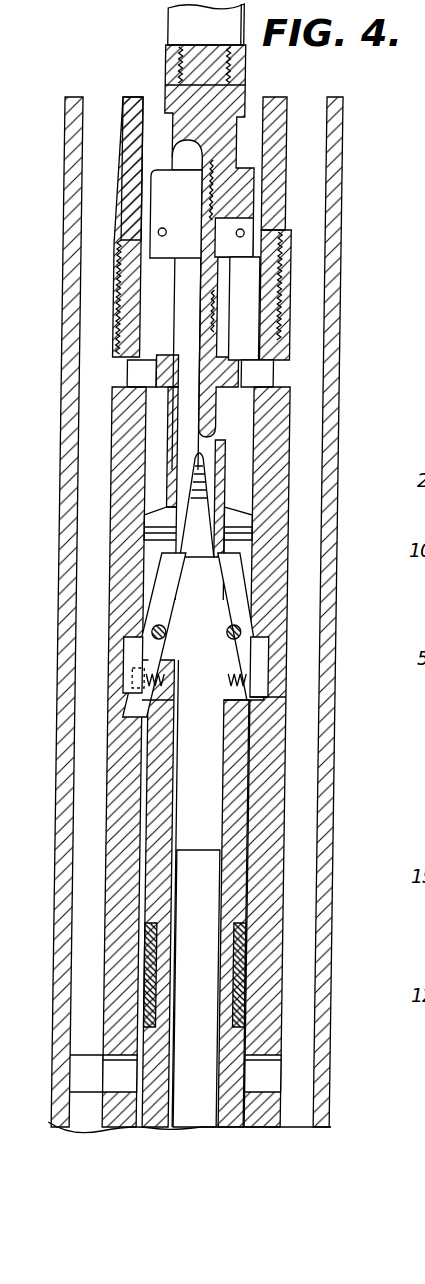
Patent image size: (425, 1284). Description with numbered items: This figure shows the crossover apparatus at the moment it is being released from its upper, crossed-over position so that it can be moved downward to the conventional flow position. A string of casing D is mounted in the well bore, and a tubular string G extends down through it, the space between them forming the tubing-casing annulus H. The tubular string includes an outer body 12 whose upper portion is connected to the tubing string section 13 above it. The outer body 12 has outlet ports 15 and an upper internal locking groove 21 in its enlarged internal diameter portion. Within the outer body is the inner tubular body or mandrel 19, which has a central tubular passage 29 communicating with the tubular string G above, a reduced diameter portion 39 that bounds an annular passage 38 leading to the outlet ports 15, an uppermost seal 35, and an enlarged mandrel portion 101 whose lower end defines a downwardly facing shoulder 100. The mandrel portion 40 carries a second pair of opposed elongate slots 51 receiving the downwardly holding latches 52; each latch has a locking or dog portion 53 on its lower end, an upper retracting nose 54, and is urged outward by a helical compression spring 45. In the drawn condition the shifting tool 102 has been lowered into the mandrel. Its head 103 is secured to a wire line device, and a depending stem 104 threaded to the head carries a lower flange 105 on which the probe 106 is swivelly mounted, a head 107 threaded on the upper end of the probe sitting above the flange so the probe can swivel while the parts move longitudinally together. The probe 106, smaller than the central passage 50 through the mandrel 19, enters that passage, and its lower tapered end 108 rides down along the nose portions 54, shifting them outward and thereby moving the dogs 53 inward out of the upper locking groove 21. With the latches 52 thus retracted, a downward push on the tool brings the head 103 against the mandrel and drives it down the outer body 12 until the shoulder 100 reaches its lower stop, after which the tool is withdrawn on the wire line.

The casing D is at (66, 830).
The tubing-casing annulus H is at (100, 117).
The tubular string G is at (281, 99).
The tubing string section 13 is at (279, 142).
The head 103 is at (250, 197).
The stem 104 is at (210, 268).
The head 107 is at (222, 284).
The lower flange 105 is at (225, 340).
The shifting tool 102 is at (160, 286).
The probe 106 is at (216, 412).
The enlarged mandrel portion 101 is at (245, 522).
The lower tapered end 108 is at (194, 560).
The second pair of opposed elongate slots 51 is at (245, 552).
The upper retracting nose 54 is at (180, 604).
The second pair of latches 52 is at (240, 620).
The upper internal locking groove 21 is at (272, 658).
The locking or dog portion 53 is at (134, 684).
The central passage 50 is at (218, 681).
The helical compression spring 45 is at (158, 698).
The shoulder 100 is at (252, 710).
The outer body 12 is at (106, 920).
The mandrel portion 40 is at (232, 840).
The uppermost seal 35 is at (237, 981).
The mandrel 19 is at (150, 1044).
The outlet ports 15 is at (270, 1074).
The central tubular passage 29 is at (204, 1100).
The reduced diameter portion 39 is at (242, 1106).
The passage 38 is at (233, 1118).